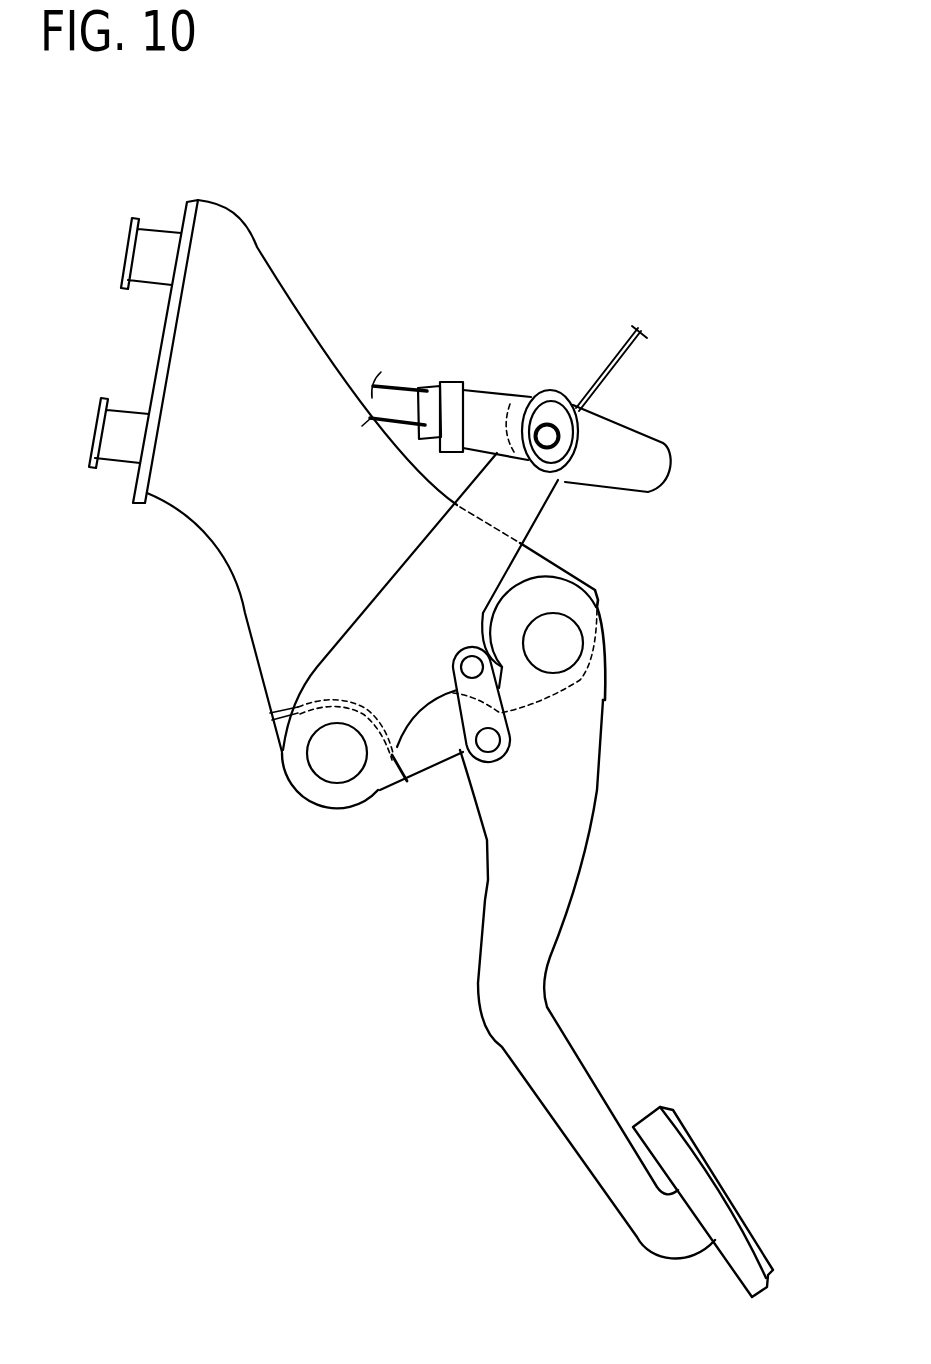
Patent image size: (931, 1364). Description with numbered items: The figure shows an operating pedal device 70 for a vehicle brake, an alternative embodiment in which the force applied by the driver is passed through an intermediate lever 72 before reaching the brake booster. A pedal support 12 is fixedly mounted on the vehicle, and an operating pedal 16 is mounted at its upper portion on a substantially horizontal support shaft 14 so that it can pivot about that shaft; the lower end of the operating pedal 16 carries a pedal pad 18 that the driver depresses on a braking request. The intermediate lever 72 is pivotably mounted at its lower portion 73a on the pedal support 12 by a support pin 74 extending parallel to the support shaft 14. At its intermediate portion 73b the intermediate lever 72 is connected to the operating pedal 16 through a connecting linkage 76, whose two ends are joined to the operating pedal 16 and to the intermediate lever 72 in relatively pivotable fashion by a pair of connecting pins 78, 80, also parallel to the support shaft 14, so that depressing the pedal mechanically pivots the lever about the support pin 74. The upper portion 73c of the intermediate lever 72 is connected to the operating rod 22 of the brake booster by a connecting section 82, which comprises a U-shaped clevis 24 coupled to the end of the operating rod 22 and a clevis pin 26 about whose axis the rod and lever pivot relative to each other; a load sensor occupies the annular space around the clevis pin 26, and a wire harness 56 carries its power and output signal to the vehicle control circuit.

The pedal support 12 is at (248, 267).
The support shaft 14 is at (568, 643).
The operating pedal 16 is at (515, 1045).
The pedal pad 18 is at (720, 1202).
The operating rod 22 is at (403, 403).
The clevis 24 is at (485, 407).
The clevis pin 26 is at (548, 430).
The wire harness 56 is at (628, 358).
The operating pedal device 70 is at (667, 301).
The intermediate lever 72 is at (343, 660).
The lower portion 73a is at (293, 757).
The intermediate portion 73b is at (453, 630).
The upper portion 73c is at (527, 480).
The support pin 74 is at (328, 767).
The connecting linkage 76 is at (492, 713).
The connecting pin 78 is at (503, 750).
The connecting pin 80 is at (457, 690).
The connecting section 82 is at (560, 477).